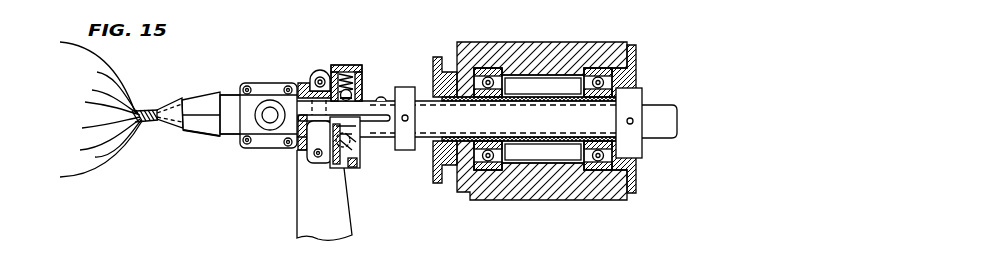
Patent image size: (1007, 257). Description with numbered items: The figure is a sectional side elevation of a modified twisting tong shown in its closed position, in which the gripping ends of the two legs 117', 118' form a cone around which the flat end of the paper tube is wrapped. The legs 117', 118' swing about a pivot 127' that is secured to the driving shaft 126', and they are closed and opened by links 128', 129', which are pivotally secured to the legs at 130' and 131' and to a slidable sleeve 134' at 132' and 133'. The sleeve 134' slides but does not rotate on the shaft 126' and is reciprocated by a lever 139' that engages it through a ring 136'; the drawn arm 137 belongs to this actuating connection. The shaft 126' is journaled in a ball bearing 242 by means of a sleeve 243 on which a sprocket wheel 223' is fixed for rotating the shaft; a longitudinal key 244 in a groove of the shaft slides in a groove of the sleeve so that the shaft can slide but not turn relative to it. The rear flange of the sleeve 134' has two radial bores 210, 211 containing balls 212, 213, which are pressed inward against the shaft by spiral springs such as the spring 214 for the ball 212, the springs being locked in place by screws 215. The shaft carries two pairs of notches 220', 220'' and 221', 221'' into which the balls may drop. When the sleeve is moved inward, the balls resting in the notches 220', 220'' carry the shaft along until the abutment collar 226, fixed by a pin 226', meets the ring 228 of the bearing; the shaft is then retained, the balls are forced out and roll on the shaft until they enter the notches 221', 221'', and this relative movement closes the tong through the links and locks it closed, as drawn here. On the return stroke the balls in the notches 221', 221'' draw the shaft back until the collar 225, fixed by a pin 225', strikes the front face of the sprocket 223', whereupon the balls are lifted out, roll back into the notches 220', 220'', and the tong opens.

The leg of the tong 117' is at (131, 82).
The leg of the tong 118' is at (126, 147).
The pivot point on leg 130' is at (201, 93).
The pivot point on leg 131' is at (205, 146).
The link 128' is at (258, 90).
The pivot 127' is at (256, 91).
The link 129' is at (228, 135).
The pivot point on sleeve 133' is at (274, 135).
The pivot point on sleeve 132' is at (302, 85).
The slidable sleeve 134' is at (325, 69).
The radial bore 210 is at (365, 58).
The screw 215 is at (342, 65).
The ball 212 is at (365, 95).
The spiral spring 214 is at (358, 93).
The notch 221' is at (415, 66).
The notch 220' is at (413, 110).
The pin 225' is at (433, 117).
The abutment collar 225 is at (349, 168).
The ring 136' is at (315, 151).
The radial bore 211 is at (343, 130).
The ball 213 is at (352, 142).
The notch 221'' is at (374, 159).
The notch 220'' is at (376, 153).
The arm 137 is at (297, 152).
The lever 139' is at (301, 195).
The sprocket wheel 223' is at (437, 139).
The driving shaft 126' is at (542, 138).
The ring of the ball bearing 228 is at (637, 90).
The ball-bearing 242 is at (550, 80).
The sleeve 243 is at (522, 97).
The longitudinal key 244 is at (538, 108).
The abutment collar 226 is at (652, 121).
The pin 226' is at (656, 147).